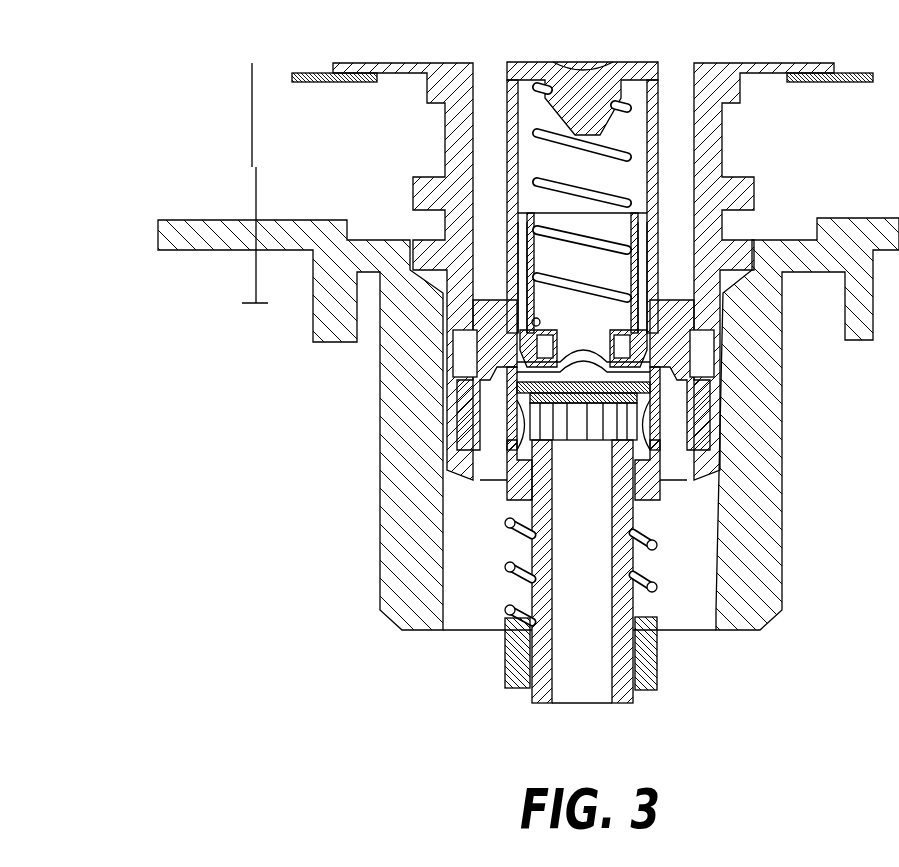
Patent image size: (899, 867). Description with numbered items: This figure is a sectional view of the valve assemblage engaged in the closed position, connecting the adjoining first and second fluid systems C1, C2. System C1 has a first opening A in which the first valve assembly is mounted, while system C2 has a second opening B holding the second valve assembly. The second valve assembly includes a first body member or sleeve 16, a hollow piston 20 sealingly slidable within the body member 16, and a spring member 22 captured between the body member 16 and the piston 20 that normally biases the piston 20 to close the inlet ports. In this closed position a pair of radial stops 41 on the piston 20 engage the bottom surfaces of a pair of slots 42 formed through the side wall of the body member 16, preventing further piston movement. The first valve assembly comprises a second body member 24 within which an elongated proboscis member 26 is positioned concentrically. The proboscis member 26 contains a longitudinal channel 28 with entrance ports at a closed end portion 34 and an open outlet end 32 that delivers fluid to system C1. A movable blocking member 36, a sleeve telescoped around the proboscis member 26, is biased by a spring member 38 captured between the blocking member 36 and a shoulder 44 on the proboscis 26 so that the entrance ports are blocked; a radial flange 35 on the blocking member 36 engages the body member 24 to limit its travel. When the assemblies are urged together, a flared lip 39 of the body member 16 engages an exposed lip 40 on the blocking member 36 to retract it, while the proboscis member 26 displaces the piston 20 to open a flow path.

The body member 16 is at (508, 152).
The hollow piston 20 is at (645, 233).
The spring member 22 is at (648, 153).
The second body member 24 is at (783, 442).
The proboscis member 26 is at (632, 558).
The longitudinal channel 28 is at (568, 700).
The open outlet end 32 is at (560, 697).
The closed end portion 34 is at (603, 440).
The radial flange 35 is at (513, 477).
The movable blocking member 36 is at (507, 493).
The spring member 38 is at (507, 570).
The flared lip 39 is at (480, 333).
The exposed lip 40 is at (480, 375).
The radial stops 41 is at (519, 212).
The slots 42 is at (517, 153).
The shoulder 44 is at (507, 608).
The first opening A is at (408, 235).
The second opening B is at (769, 76).
The first fluid system C1 is at (247, 252).
The second fluid system C2 is at (350, 65).